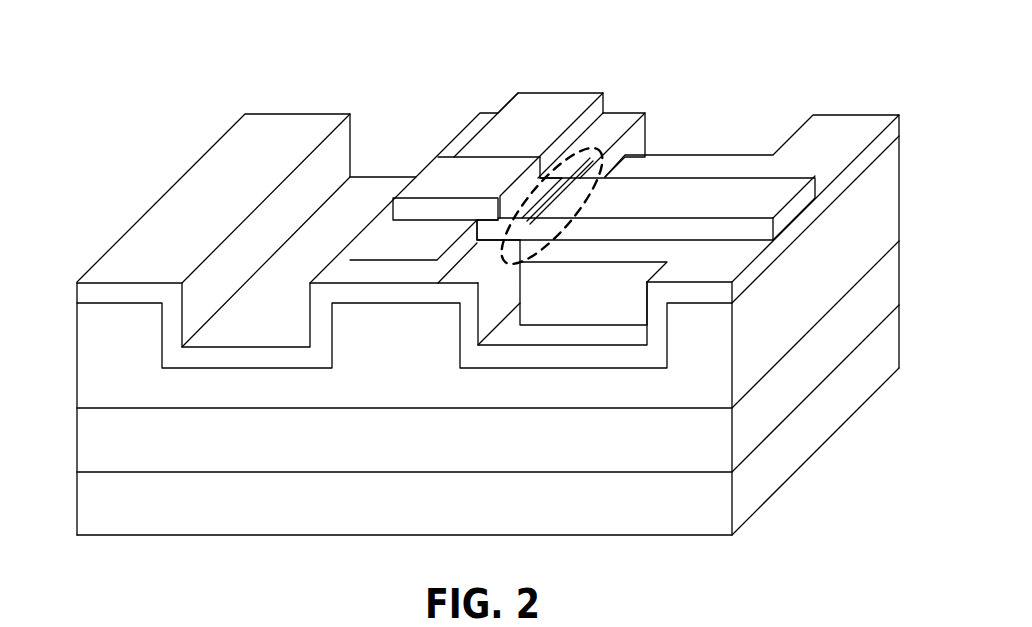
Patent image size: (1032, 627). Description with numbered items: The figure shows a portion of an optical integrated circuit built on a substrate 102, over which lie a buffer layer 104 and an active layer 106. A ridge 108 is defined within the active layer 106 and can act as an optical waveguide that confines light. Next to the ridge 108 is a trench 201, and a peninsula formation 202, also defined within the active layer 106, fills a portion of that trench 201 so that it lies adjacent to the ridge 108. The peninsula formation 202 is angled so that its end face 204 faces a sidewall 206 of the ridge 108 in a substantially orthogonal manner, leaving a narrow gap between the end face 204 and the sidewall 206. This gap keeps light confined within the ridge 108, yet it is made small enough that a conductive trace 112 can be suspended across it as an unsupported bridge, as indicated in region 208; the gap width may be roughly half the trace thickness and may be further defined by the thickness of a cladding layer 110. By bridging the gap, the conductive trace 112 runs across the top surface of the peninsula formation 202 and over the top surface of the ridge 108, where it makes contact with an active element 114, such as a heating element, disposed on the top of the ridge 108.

The substrate 102 is at (429, 515).
The buffer layer 104 is at (429, 461).
The active layer 106 is at (551, 401).
The ridge 108 is at (409, 353).
The cladding layer 110 is at (98, 292).
The conductive trace 112 is at (758, 192).
The active element 114 is at (550, 115).
The trench 201 is at (692, 133).
The peninsula formation 202 is at (595, 308).
The end face 204 is at (520, 288).
The sidewall 206 is at (499, 290).
The region 208 is at (589, 176).